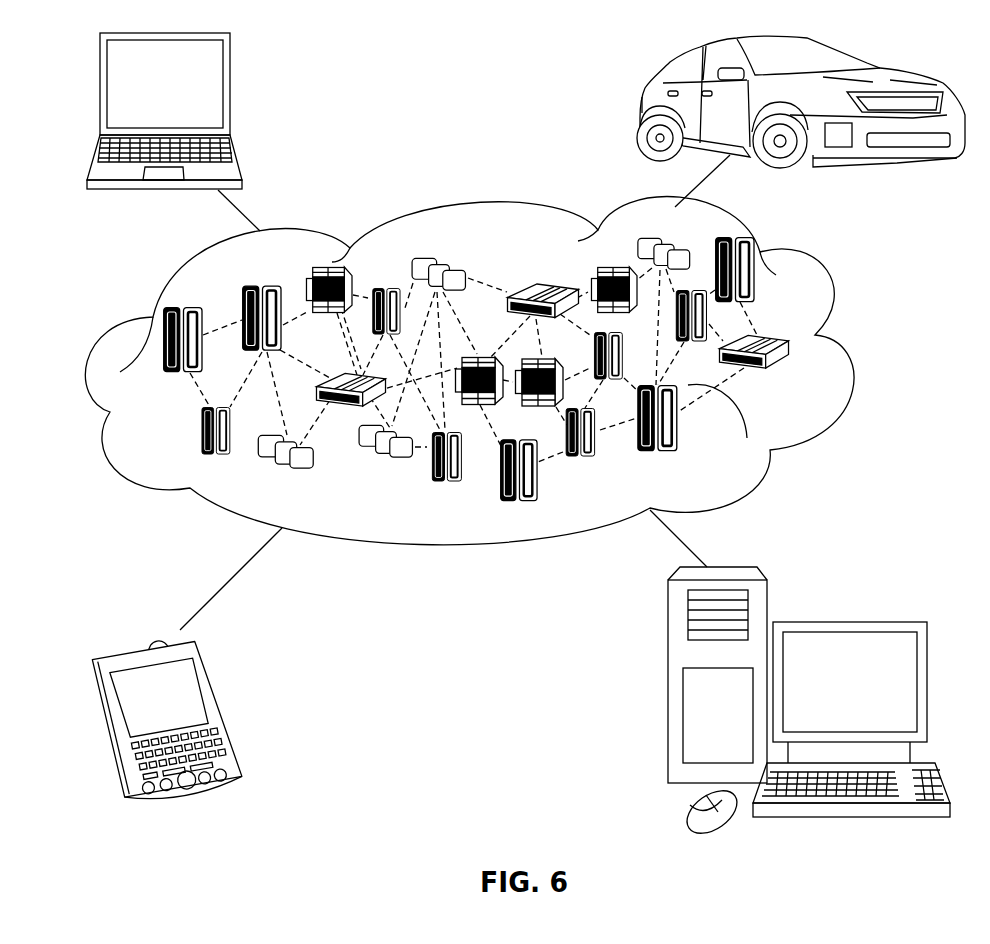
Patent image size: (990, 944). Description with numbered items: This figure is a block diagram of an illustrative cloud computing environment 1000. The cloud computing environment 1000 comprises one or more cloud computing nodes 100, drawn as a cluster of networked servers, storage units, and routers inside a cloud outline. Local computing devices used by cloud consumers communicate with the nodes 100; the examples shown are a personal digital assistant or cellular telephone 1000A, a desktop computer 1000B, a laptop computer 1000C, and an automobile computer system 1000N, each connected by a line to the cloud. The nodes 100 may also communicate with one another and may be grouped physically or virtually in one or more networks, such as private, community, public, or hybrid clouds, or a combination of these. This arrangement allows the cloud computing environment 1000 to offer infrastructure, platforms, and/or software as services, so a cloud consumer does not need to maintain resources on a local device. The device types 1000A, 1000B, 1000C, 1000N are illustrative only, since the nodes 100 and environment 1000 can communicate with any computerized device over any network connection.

The cloud computing nodes 100 is at (795, 378).
The cloud computing environment 1000 is at (848, 350).
The personal digital assistant or cellular telephone 1000A is at (218, 709).
The desktop computer 1000B is at (847, 622).
The laptop computer 1000C is at (231, 92).
The automobile computer system 1000N is at (641, 109).